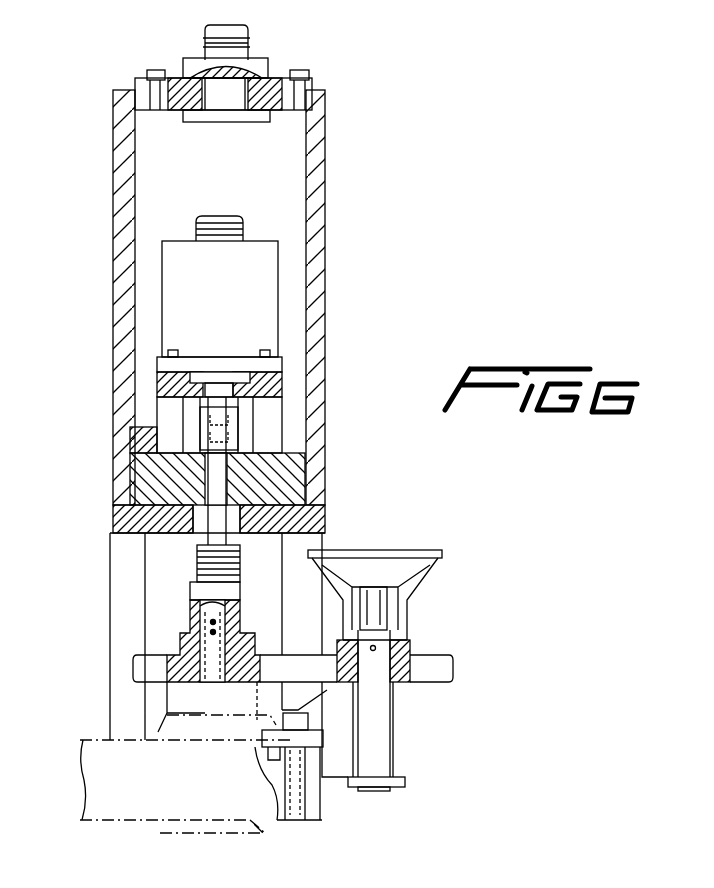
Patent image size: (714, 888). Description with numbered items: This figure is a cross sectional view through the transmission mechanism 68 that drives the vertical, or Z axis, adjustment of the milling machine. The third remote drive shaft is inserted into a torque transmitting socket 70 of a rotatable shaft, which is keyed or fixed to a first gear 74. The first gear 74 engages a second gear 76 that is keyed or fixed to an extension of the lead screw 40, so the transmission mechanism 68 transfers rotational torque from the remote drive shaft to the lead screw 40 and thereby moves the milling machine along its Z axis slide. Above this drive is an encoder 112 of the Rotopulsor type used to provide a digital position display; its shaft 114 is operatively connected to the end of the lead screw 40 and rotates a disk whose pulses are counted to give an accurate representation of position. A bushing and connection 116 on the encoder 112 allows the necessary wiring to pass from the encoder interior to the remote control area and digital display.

The encoder 112 is at (337, 287).
The bushing and connection 116 is at (247, 63).
The shaft 114 is at (220, 392).
The second gear 76 is at (152, 653).
The first gear 74 is at (455, 672).
The torque transmitting socket 70 is at (373, 615).
The transmission mechanism 68 is at (411, 695).
The lead screw 40 is at (203, 682).